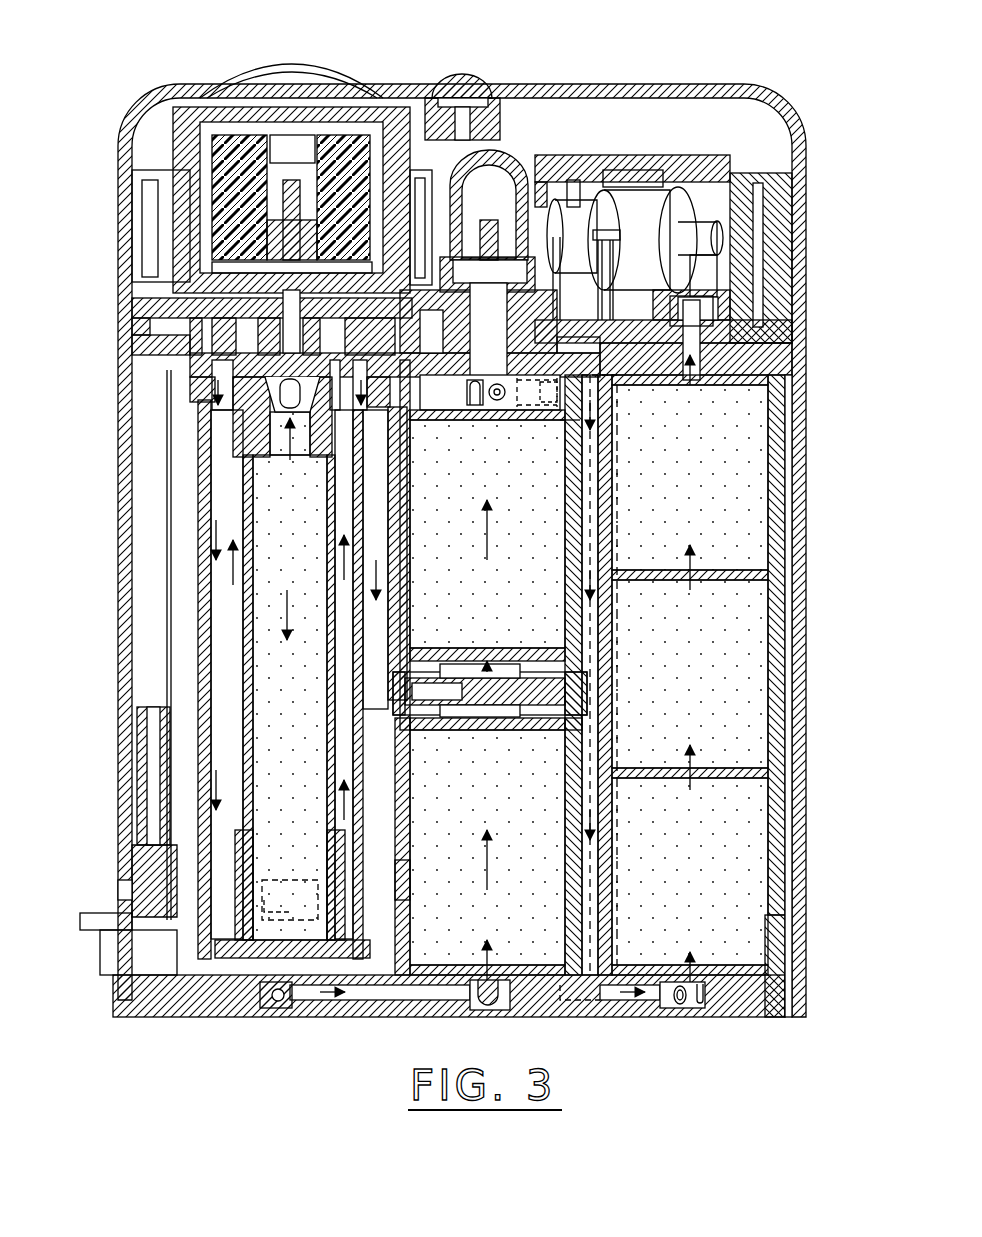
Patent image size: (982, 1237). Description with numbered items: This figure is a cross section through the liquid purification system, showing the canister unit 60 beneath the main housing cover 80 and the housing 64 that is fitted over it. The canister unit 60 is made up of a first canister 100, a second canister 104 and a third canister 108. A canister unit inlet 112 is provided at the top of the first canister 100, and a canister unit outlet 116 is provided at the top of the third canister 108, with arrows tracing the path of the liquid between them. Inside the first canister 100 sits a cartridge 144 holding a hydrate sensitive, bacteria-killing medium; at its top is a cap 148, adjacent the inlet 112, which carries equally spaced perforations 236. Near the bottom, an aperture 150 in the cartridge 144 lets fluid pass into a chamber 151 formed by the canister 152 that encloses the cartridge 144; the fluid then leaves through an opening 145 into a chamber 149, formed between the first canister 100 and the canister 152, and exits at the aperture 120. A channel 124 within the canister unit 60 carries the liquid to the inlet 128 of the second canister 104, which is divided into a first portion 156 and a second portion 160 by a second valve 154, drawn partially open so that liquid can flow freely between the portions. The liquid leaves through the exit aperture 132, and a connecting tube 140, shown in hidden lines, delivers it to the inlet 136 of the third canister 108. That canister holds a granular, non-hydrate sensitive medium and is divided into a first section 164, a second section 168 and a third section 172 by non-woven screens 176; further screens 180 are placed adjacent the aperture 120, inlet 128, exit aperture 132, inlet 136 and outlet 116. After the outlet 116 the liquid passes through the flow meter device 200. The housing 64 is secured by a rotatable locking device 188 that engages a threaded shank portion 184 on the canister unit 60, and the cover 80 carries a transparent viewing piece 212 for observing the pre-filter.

The main housing cover 80 is at (795, 95).
The viewing piece 212 is at (290, 60).
The locking device 188 is at (458, 70).
The flow meter device 200 is at (683, 186).
The canister unit inlet 112 is at (300, 338).
The canister unit outlet 116 is at (730, 300).
The opening 145 is at (190, 360).
The canister unit 60 is at (185, 400).
The first canister 100 is at (200, 572).
The canister 152 is at (215, 612).
The chamber 151 is at (243, 688).
The cartridge 144 is at (240, 668).
The perforations 236 is at (290, 676).
The cap 148 is at (290, 414).
The chamber 149 is at (235, 690).
The aperture 150 is at (288, 885).
The second portion 160 is at (506, 599).
The exit aperture 132 is at (478, 418).
The threaded shank portion 184 is at (545, 395).
The connecting tube 140 is at (615, 612).
The third section 172 is at (710, 543).
The screens 176 is at (730, 585).
The second section 168 is at (710, 738).
The first section 164 is at (708, 913).
The third canister 108 is at (795, 540).
The housing 64 is at (808, 440).
The second valve 154 is at (592, 694).
The first portion 156 is at (524, 810).
The second canister 104 is at (400, 865).
The channel 124 is at (342, 1008).
The aperture 120 is at (276, 1008).
The inlet 128 is at (498, 1010).
The inlet 136 is at (690, 1010).
The screens 180 is at (525, 428).